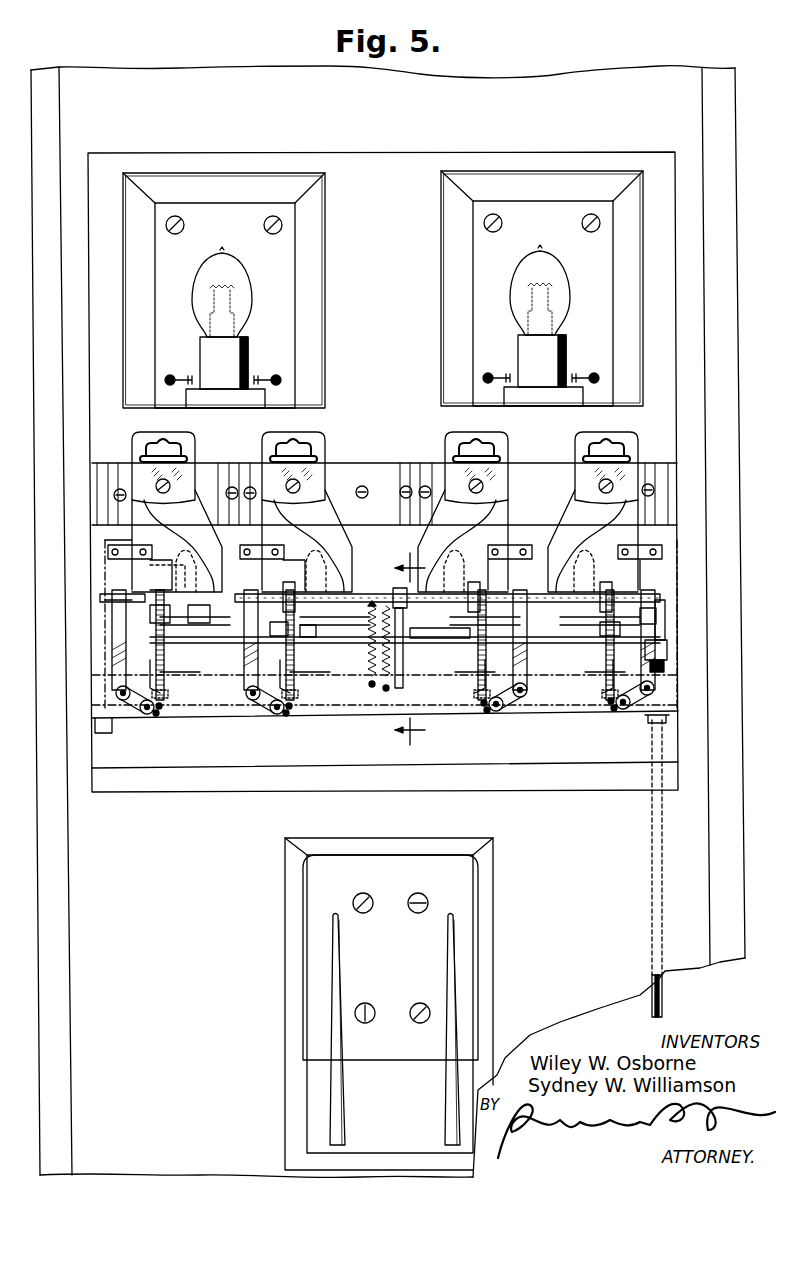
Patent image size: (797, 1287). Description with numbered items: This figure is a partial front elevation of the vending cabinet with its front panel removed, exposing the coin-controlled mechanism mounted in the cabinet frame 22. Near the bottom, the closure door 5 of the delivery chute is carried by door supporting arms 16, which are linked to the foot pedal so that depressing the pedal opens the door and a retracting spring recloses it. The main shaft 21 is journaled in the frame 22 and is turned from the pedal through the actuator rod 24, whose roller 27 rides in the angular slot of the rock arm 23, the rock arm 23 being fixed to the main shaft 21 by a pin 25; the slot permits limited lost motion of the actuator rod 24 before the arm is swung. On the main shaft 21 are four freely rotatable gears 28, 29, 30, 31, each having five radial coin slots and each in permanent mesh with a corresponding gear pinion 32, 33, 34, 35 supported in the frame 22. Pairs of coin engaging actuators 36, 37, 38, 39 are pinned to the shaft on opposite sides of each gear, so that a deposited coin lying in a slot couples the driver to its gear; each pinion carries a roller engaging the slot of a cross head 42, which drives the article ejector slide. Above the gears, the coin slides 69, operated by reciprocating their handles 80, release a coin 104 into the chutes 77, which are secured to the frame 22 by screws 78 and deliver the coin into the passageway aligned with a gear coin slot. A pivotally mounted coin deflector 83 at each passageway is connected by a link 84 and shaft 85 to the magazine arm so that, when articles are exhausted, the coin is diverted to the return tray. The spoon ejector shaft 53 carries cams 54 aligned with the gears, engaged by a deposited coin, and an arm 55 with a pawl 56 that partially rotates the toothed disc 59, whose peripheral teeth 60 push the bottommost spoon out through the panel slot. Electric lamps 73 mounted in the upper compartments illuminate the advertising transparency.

The closure door 5 is at (389, 1004).
The door supporting arms 16 is at (343, 1093).
The main shaft 21 is at (405, 630).
The cabinet frame 22 is at (105, 565).
The rock arm 23 is at (667, 650).
The actuator rod 24 is at (652, 776).
The pin 25 is at (665, 625).
The roller 27 is at (664, 668).
The gear 28 is at (166, 658).
The gear 29 is at (296, 659).
The gear 30 is at (478, 660).
The gear 31 is at (606, 659).
The gear pinion 32 is at (170, 694).
The gear pinion 33 is at (300, 694).
The gear pinion 34 is at (474, 694).
The gear pinion 35 is at (602, 694).
The coin engaging actuators 36 is at (150, 615).
The coin engaging actuators 37 is at (322, 636).
The coin engaging actuators 38 is at (440, 634).
The coin engaging actuators 39 is at (600, 630).
The cross head 42 is at (605, 714).
The shaft 53 is at (367, 594).
The cams 54 is at (296, 590).
The arm 55 is at (403, 650).
The pawl 56 is at (390, 680).
The toothed disc 59 is at (372, 688).
The peripheral teeth 60 is at (398, 646).
The coin slide 69 is at (140, 460).
The electric lamps 73 is at (232, 275).
The chute 77 is at (385, 541).
The screws 78 is at (114, 493).
The handle 80 is at (163, 448).
The coin deflector 83 is at (681, 590).
The link 84 is at (112, 659).
The shaft 85 is at (147, 716).
The coin 104 is at (185, 590).